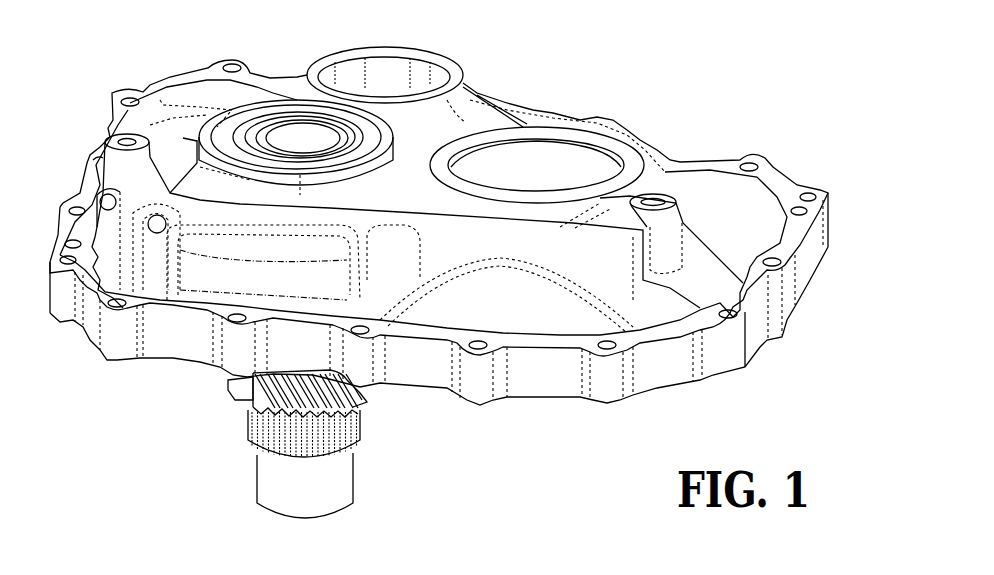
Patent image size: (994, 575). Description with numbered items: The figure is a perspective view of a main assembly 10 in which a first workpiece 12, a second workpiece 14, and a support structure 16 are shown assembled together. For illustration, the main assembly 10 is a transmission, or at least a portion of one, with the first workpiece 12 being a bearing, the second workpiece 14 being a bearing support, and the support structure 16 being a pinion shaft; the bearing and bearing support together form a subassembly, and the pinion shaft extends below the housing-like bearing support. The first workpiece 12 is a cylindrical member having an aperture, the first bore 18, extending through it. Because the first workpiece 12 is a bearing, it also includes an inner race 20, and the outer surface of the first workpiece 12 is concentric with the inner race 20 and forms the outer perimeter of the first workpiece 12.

The main assembly 10 is at (662, 90).
The first workpiece 12 is at (375, 113).
The second workpiece 14 is at (808, 143).
The support structure 16 is at (380, 445).
The first bore 18 is at (303, 128).
The inner race 20 is at (248, 133).